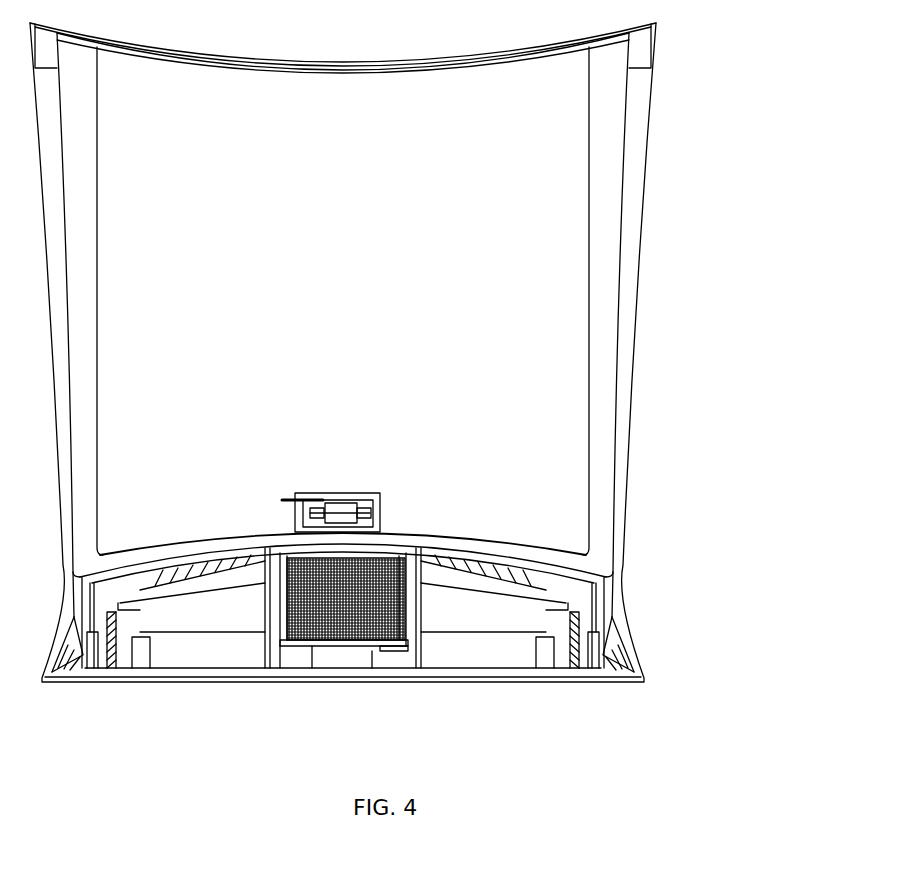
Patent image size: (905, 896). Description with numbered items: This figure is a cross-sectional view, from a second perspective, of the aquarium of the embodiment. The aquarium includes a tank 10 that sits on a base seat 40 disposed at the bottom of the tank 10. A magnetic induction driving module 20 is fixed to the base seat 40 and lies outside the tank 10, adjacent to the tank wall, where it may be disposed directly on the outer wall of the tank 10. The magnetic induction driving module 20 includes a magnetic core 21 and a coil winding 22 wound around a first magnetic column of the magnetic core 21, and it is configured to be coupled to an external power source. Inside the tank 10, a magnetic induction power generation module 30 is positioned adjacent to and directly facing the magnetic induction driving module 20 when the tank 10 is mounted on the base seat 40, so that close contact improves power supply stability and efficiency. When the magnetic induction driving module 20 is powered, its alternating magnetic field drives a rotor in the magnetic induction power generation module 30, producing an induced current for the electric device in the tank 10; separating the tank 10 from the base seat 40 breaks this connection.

The tank 10 is at (627, 298).
The magnetic induction driving module 20 is at (344, 661).
The magnetic core 21 is at (338, 660).
The coil winding 22 is at (358, 634).
The magnetic induction power generation module 30 is at (368, 493).
The base seat 40 is at (618, 601).